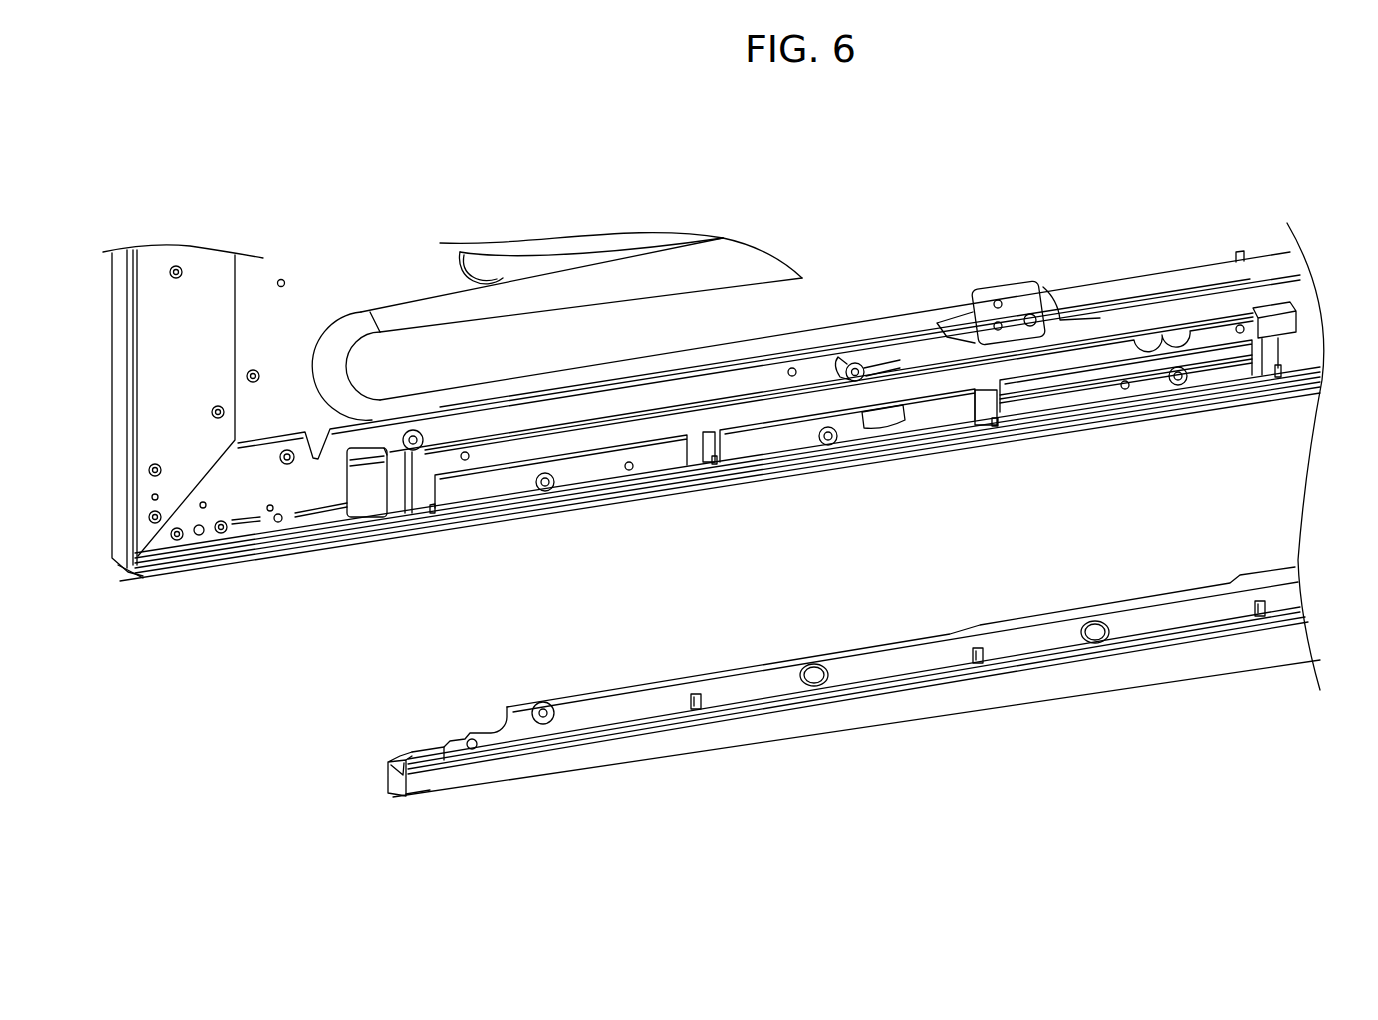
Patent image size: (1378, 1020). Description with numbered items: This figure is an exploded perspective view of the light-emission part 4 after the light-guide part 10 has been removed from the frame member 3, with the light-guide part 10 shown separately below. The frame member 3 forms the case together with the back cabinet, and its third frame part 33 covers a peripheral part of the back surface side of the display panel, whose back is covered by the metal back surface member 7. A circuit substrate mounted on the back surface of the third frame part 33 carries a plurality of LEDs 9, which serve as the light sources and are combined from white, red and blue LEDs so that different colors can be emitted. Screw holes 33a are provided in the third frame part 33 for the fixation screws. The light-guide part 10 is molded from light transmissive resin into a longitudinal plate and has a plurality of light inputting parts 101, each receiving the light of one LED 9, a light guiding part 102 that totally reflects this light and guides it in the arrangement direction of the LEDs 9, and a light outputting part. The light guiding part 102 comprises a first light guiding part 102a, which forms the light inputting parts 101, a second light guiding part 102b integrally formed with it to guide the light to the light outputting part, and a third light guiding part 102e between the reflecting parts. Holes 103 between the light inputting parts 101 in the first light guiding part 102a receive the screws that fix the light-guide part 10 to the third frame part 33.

The frame member 3 is at (180, 478).
The back surface member 7 is at (337, 290).
The light emitting diode 9 is at (432, 507).
The light-guide part 10 is at (824, 720).
The third frame part 33 is at (282, 522).
The screw hole 33a is at (548, 487).
The light-emission part 4 is at (385, 793).
The light inputting part 101 is at (700, 710).
The light guiding part 102 is at (1183, 662).
The first light guiding part 102a is at (670, 700).
The second light guiding part 102b is at (438, 777).
The third light guiding part 102e is at (512, 747).
The hole 103 is at (557, 720).